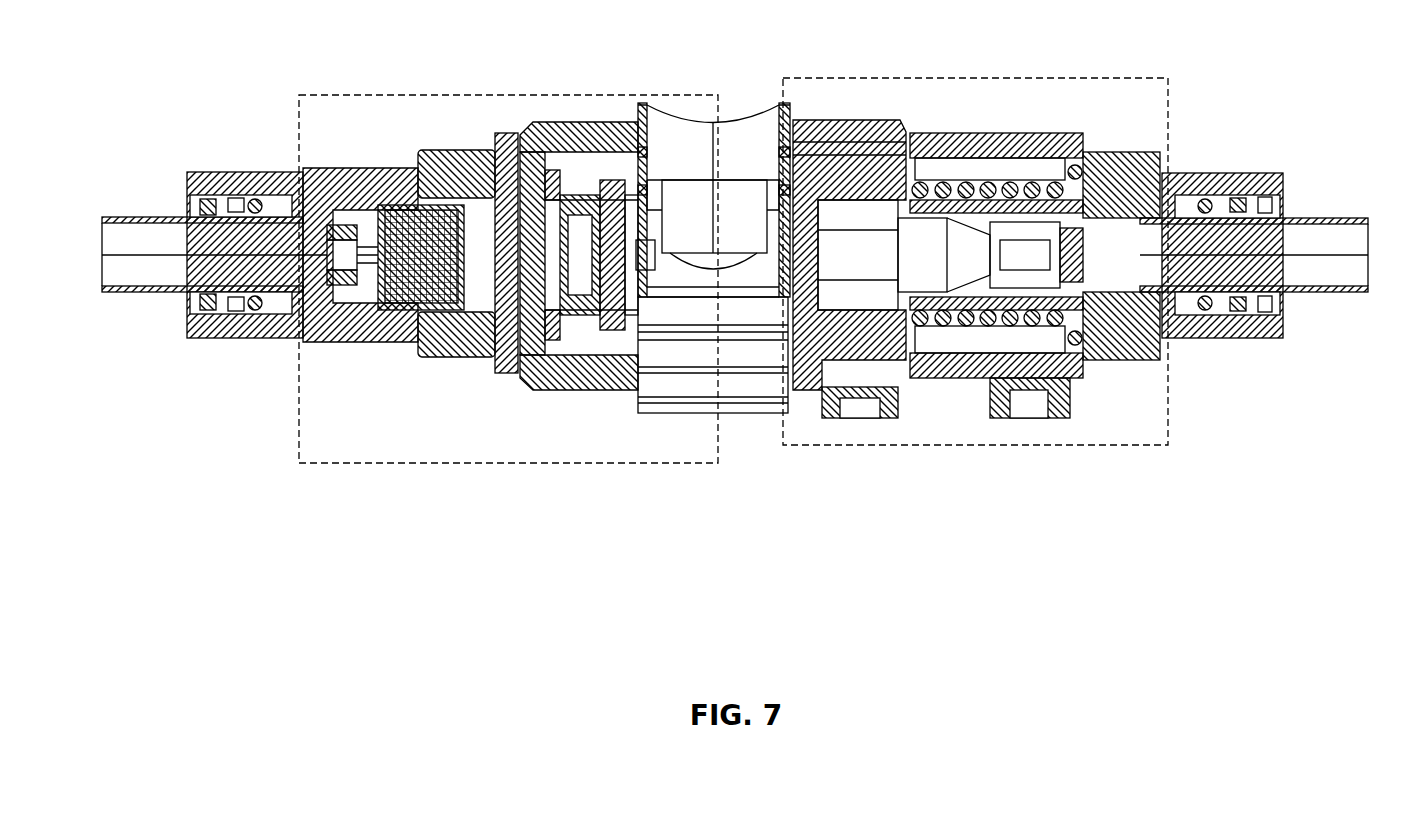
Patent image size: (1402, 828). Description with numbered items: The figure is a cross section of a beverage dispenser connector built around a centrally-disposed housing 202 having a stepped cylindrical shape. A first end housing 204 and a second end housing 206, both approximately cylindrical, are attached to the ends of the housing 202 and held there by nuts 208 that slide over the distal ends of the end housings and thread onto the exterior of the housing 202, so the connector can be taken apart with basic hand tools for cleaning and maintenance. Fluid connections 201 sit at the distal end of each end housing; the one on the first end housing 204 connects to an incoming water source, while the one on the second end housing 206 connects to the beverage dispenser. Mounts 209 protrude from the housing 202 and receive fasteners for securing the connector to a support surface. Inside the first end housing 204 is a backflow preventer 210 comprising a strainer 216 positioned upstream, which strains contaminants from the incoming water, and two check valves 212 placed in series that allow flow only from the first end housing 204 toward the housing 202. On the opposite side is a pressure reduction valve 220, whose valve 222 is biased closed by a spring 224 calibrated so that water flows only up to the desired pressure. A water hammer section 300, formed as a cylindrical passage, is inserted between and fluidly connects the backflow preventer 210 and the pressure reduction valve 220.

The fluid connection 201 is at (128, 238).
The housing 202 is at (818, 118).
The first end housing 204 is at (378, 322).
The second end housing 206 is at (1240, 338).
The nut 208 is at (452, 150).
The mount 209 is at (1025, 405).
The backflow preventer 210 is at (490, 463).
The check valve 212 is at (575, 245).
The strainer 216 is at (403, 165).
The pressure reduction valve 220 is at (1063, 447).
The valve 222 is at (973, 262).
The spring 224 is at (987, 190).
The water hammer section 300 is at (747, 387).